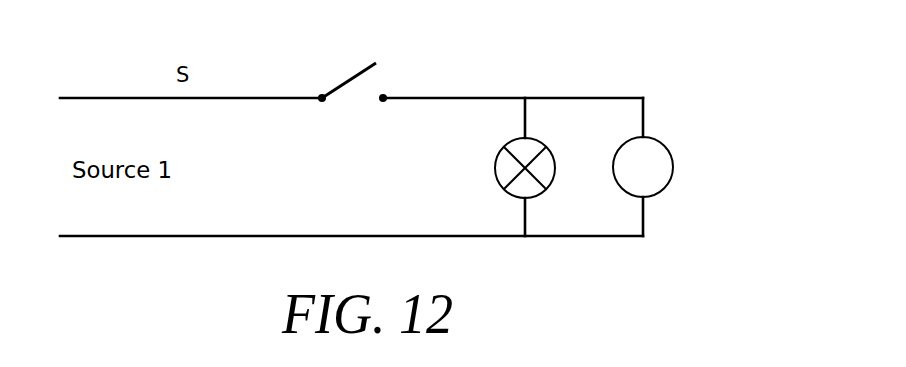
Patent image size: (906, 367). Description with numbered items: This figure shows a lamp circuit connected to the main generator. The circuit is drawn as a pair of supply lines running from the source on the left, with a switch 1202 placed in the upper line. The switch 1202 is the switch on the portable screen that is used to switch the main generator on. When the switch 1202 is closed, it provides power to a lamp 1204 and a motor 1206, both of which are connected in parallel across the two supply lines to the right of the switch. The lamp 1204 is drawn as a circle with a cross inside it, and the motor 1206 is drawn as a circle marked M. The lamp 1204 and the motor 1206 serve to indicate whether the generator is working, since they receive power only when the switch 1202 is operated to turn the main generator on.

The switch 1202 is at (348, 78).
The lamp 1204 is at (495, 166).
The motor 1206 is at (673, 167).